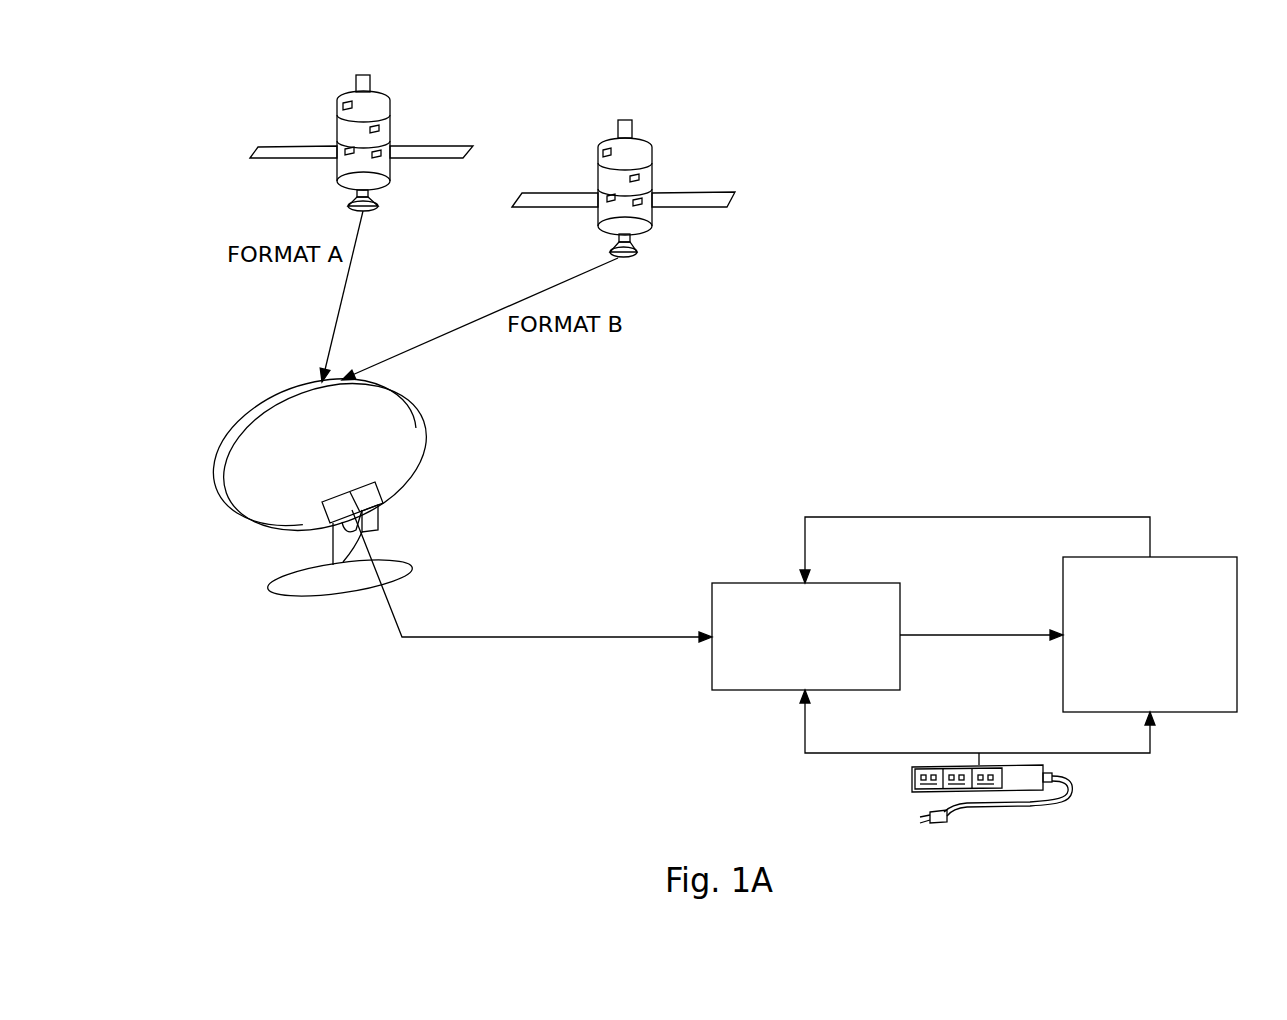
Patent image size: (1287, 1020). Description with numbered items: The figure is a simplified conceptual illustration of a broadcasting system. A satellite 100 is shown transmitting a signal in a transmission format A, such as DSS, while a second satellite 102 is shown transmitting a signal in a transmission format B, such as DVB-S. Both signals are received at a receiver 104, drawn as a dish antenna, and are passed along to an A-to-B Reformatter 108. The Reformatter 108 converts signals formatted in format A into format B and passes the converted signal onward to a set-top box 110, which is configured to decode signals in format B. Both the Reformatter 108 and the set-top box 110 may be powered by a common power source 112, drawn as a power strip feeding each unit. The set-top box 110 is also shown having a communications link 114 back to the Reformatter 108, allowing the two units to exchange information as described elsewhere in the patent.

The satellite 100 is at (337, 128).
The satellite 102 is at (655, 176).
The receiver 104 is at (242, 420).
The A-to-B Reformatter 108 is at (780, 583).
The set-top box (STB) 110 is at (1187, 557).
The power source 112 is at (1050, 812).
The communications link 114 is at (967, 516).